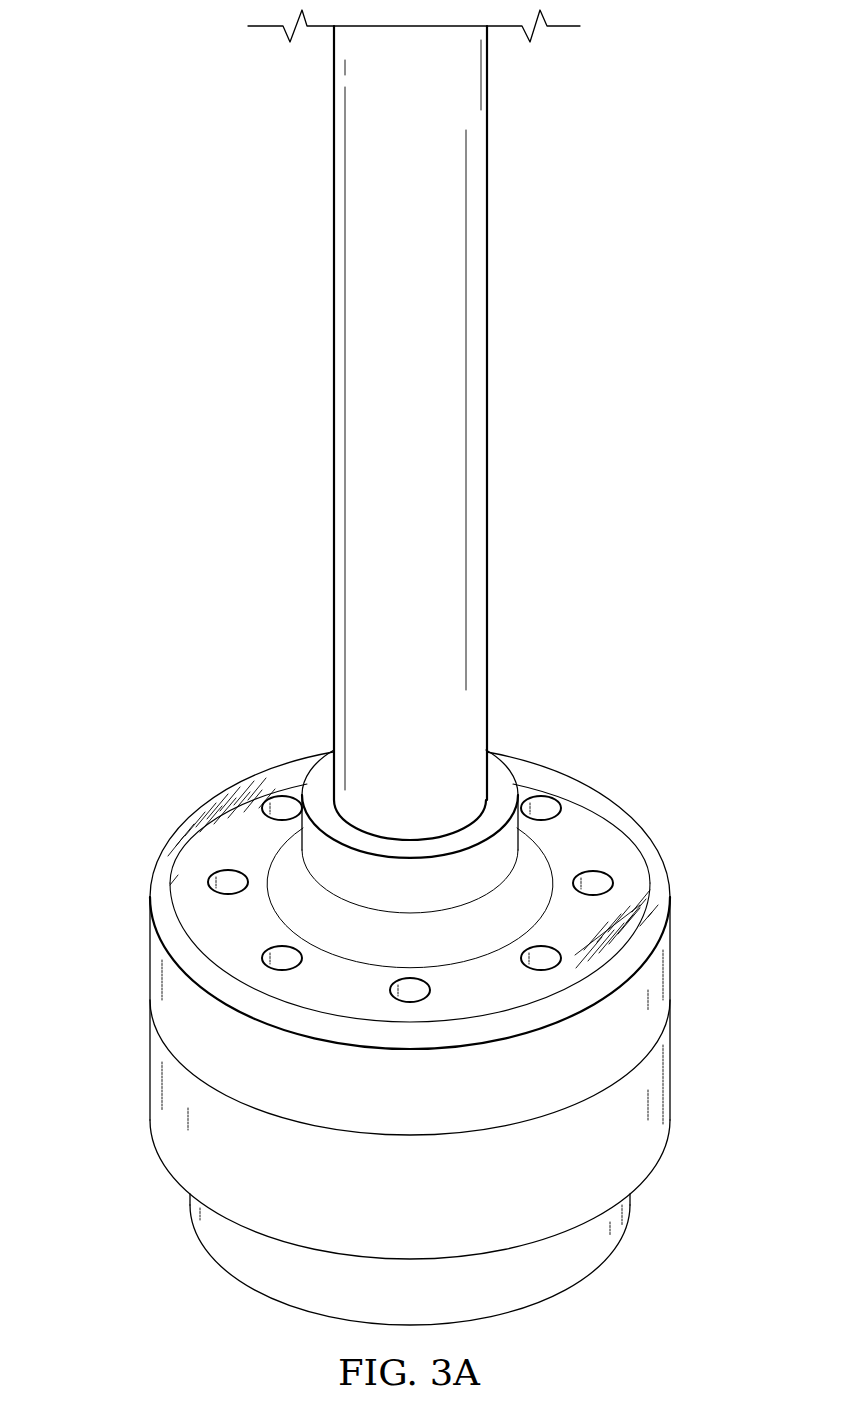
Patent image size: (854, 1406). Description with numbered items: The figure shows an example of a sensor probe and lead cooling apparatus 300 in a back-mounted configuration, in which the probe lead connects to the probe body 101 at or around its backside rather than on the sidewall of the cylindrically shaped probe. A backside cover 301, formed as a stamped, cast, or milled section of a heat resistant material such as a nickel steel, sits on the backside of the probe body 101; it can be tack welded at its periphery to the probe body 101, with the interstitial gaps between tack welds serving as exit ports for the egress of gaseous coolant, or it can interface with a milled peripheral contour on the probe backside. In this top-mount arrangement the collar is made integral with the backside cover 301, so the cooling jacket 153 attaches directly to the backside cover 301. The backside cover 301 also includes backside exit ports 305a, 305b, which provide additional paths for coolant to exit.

The apparatus 300 is at (400, 667).
The cooling jacket 153 is at (693, 949).
The backside cover 301 is at (360, 880).
The backside exit port 305a is at (542, 802).
The backside exit port 305b is at (597, 878).
The probe body 101 is at (119, 1088).